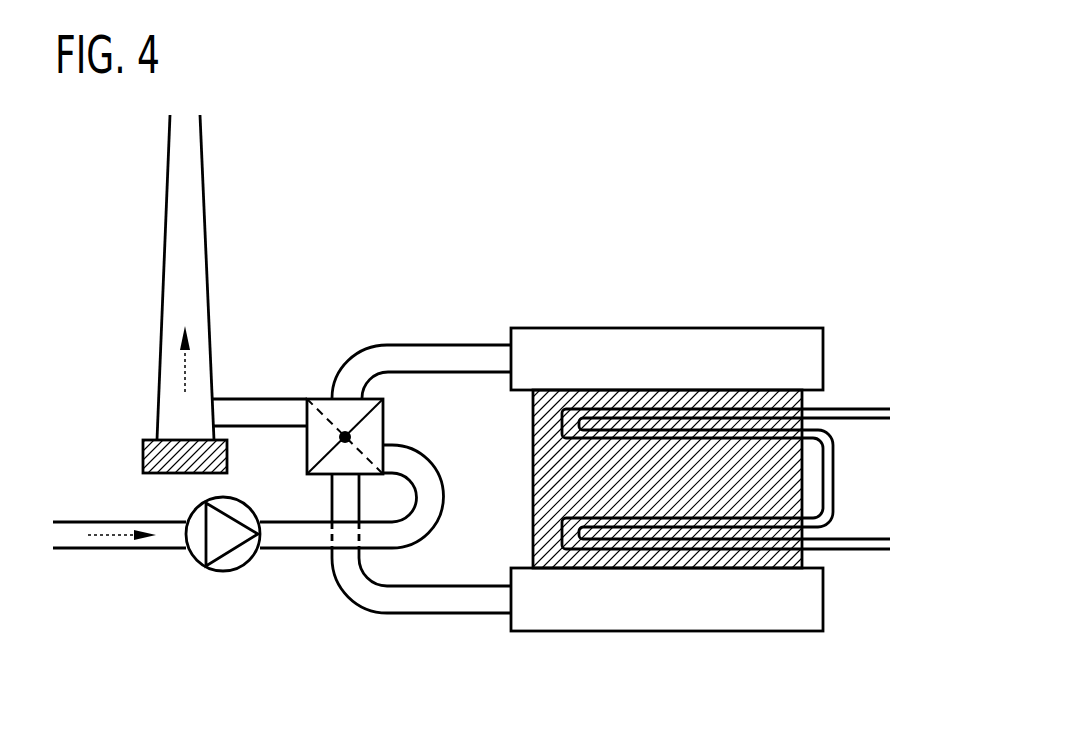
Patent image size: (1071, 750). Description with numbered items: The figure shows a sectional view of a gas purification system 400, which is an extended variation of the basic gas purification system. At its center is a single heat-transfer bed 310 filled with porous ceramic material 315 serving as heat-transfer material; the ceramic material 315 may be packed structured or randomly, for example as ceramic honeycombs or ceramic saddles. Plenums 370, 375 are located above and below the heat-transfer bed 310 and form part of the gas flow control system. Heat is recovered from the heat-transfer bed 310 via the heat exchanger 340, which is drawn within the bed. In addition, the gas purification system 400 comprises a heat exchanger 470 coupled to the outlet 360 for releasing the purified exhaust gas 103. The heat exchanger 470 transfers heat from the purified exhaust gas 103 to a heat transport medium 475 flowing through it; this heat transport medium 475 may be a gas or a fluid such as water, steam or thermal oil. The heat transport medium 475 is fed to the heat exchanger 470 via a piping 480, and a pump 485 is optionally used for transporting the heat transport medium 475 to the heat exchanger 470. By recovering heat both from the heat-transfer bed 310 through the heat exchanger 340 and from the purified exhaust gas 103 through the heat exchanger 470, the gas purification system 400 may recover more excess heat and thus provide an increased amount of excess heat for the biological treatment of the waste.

The gas purification system 400 is at (129, 704).
The heat transport medium 475 is at (185, 372).
The piping 480 is at (103, 550).
The pump 485 is at (222, 572).
The heat exchanger 470 is at (318, 396).
The outlet 360 is at (442, 341).
The purified exhaust gas 103 is at (443, 617).
The plenum 370 is at (665, 326).
The plenum 375 is at (665, 634).
The heat-transfer bed 310 is at (533, 450).
The porous ceramic material 315 is at (533, 508).
The heat exchanger 340 is at (835, 483).